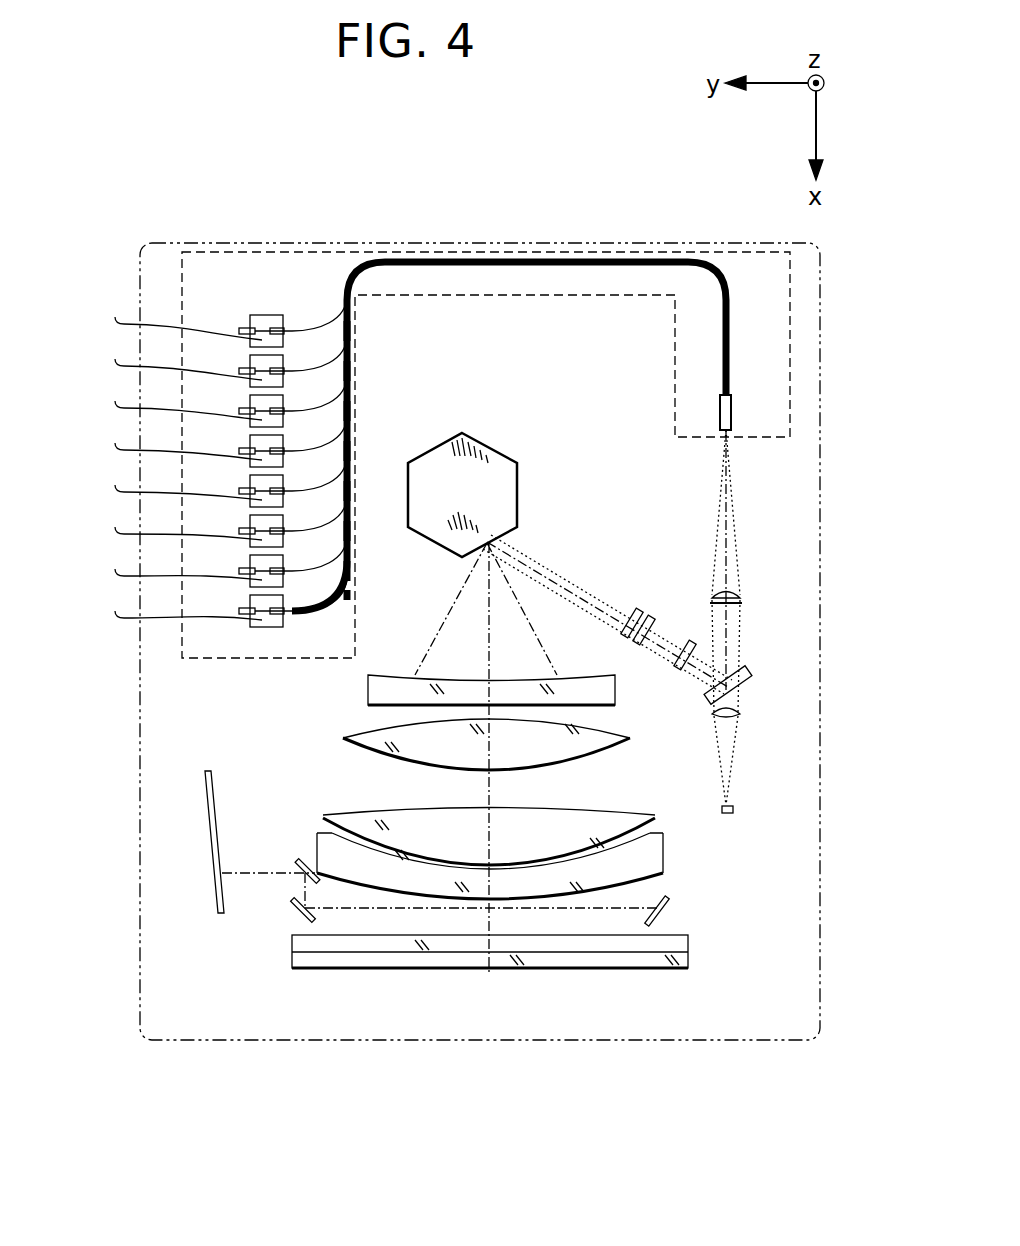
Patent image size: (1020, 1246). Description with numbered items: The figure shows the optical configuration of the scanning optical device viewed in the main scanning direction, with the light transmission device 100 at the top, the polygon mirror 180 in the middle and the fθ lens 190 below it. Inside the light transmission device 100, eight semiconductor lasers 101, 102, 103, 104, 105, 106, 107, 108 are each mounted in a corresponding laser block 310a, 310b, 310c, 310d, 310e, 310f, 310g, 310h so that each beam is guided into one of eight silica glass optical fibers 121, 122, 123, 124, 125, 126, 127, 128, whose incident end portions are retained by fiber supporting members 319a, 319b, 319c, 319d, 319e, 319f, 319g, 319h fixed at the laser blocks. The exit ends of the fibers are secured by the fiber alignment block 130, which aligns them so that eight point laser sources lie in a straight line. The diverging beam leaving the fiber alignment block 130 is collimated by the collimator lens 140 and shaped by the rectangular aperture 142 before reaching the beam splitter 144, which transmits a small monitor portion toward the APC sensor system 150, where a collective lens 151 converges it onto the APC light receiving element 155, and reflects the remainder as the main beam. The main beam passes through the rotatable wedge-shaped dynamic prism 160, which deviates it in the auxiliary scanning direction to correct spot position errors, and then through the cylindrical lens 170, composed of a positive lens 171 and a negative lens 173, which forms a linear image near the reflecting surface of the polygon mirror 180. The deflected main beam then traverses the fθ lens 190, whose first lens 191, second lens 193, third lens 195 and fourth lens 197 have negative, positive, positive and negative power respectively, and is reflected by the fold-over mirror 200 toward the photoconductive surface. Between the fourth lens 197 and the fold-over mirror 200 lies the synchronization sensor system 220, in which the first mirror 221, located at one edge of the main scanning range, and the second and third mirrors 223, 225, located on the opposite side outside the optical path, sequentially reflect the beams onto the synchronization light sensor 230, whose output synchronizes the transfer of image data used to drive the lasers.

The light transmission device 100 is at (592, 298).
The semiconductor laser 101 is at (248, 610).
The semiconductor laser 102 is at (248, 570).
The semiconductor laser 103 is at (248, 530).
The semiconductor laser 104 is at (248, 490).
The semiconductor laser 105 is at (248, 450).
The semiconductor laser 106 is at (248, 410).
The semiconductor laser 107 is at (248, 370).
The semiconductor laser 108 is at (248, 330).
The silica glass optical fiber 121 is at (350, 611).
The silica glass optical fiber 122 is at (350, 571).
The silica glass optical fiber 123 is at (350, 531).
The silica glass optical fiber 124 is at (350, 491).
The silica glass optical fiber 125 is at (350, 451).
The silica glass optical fiber 126 is at (350, 411).
The silica glass optical fiber 127 is at (350, 371).
The silica glass optical fiber 128 is at (350, 331).
The fiber alignment block 130 is at (756, 406).
The collimator lens 140 is at (740, 595).
The aperture 142 is at (742, 603).
The beam splitter 144 is at (750, 674).
The automatic power control (APC) sensor system 150 is at (794, 760).
The collective lens 151 is at (740, 713).
The APC light receiving element 155 is at (733, 808).
The dynamic prism 160 is at (685, 665).
The cylindrical lens 170 is at (643, 577).
The lens 171 is at (648, 624).
The lens 173 is at (636, 612).
The polygon mirror 180 is at (470, 437).
The fθ lens 190 is at (430, 787).
The first lens 191 is at (368, 693).
The second lens 193 is at (345, 738).
The third lens 195 is at (330, 812).
The fourth lens 197 is at (465, 849).
The fold-over mirror 200 is at (303, 958).
The synchronization sensor system 220 is at (480, 973).
The first mirror 221 is at (609, 961).
The second mirror 223 is at (318, 882).
The third mirror 225 is at (315, 920).
The synchronization light sensor 230 is at (222, 898).
The laser block 310a is at (168, 604).
The laser block 310b is at (168, 563).
The laser block 310c is at (168, 522).
The laser block 310d is at (168, 481).
The laser block 310e is at (168, 440).
The laser block 310f is at (168, 399).
The laser block 310g is at (168, 358).
The laser block 310h is at (168, 317).
The fiber supporting member 319a is at (313, 599).
The fiber supporting member 319b is at (313, 559).
The fiber supporting member 319c is at (313, 519).
The fiber supporting member 319d is at (313, 479).
The fiber supporting member 319e is at (313, 439).
The fiber supporting member 319f is at (313, 399).
The fiber supporting member 319g is at (313, 359).
The fiber supporting member 319h is at (313, 319).